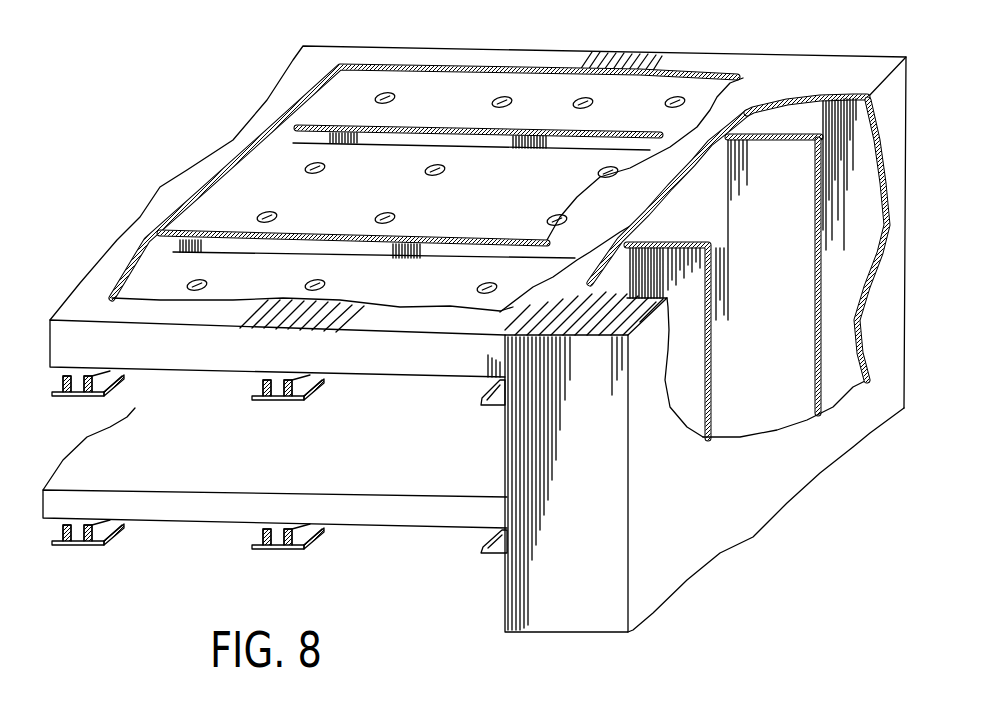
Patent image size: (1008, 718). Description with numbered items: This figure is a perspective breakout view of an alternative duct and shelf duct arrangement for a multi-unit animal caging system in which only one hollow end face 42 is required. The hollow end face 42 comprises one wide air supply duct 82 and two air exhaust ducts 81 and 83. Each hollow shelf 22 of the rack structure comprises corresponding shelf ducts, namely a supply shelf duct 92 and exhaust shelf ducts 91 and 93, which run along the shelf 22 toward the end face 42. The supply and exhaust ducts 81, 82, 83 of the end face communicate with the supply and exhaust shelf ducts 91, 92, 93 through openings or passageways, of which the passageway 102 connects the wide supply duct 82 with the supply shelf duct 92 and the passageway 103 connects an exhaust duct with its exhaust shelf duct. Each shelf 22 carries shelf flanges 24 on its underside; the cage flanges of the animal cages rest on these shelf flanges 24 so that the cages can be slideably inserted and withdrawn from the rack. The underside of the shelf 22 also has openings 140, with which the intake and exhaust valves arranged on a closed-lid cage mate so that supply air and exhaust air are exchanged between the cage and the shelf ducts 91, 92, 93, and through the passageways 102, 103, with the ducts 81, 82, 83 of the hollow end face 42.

The hollow shelf 22 is at (375, 358).
The shelf flange 24 is at (108, 393).
The hollow end face 42 is at (657, 540).
The air exhaust duct 81 is at (675, 383).
The air supply duct 82 is at (767, 383).
The air exhaust duct 83 is at (833, 310).
The exhaust shelf duct 91 is at (163, 277).
The supply shelf duct 92 is at (240, 200).
The exhaust shelf duct 93 is at (360, 97).
The passageway 102 is at (682, 192).
The passageway 103 is at (793, 120).
The openings 140 is at (498, 102).